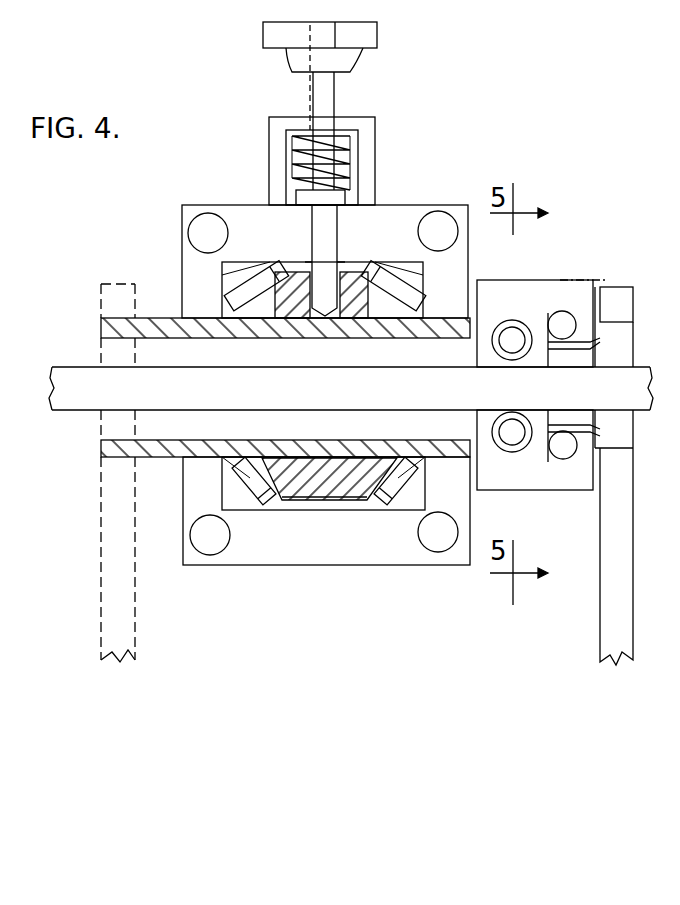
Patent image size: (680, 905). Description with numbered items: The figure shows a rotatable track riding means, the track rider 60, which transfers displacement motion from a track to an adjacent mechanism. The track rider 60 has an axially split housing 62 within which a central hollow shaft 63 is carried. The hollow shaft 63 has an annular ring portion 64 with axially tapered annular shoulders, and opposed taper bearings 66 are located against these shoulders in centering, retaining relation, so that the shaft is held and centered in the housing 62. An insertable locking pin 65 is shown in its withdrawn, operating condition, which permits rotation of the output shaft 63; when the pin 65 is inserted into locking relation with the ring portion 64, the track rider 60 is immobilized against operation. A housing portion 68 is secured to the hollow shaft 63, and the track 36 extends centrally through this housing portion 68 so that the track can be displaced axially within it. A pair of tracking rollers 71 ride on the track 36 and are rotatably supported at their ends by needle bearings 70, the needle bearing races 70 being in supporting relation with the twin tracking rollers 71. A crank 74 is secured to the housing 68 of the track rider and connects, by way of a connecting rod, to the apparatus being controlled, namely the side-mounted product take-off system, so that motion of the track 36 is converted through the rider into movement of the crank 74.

The track 36 is at (276, 400).
The track rider 60 is at (566, 194).
The axially split housing 62 is at (393, 567).
The central hollow shaft 63 is at (156, 344).
The annular ring portion 64 is at (345, 468).
The insertable locking pin 65 is at (342, 258).
The taper bearings 66 is at (248, 268).
The housing portion 68 is at (592, 272).
The needle bearings 70 is at (535, 315).
The tracking rollers 71 is at (498, 322).
The crank 74 is at (612, 628).